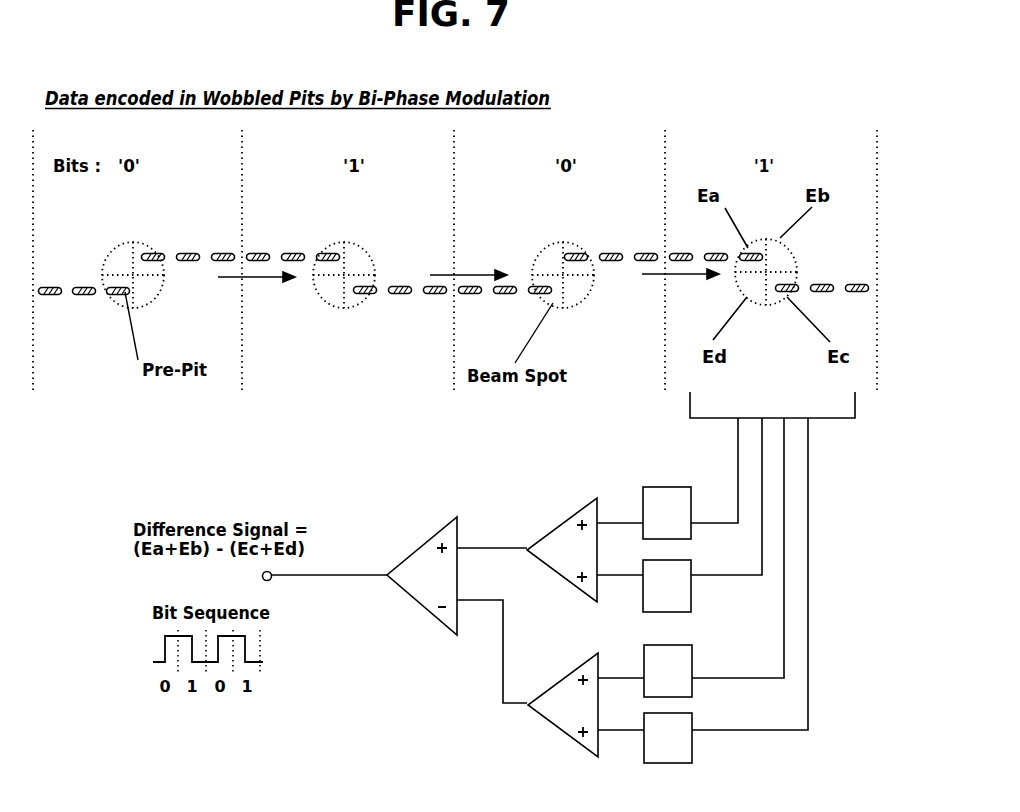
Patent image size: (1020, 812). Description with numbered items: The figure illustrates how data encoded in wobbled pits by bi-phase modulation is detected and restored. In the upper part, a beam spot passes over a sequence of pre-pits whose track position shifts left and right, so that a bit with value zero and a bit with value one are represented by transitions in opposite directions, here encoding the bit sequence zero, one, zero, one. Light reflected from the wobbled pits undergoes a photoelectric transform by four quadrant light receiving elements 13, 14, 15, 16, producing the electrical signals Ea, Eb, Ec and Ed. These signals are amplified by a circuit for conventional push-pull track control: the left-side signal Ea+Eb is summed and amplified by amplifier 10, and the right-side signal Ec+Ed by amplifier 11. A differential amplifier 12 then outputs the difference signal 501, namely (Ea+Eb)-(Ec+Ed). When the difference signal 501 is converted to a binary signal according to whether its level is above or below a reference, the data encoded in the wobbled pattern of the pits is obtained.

The amplifier 10 is at (565, 518).
The amplifier 11 is at (565, 675).
The differential amplifier 12 is at (422, 547).
The quadrant light receiving element 13 is at (691, 490).
The quadrant light receiving element 14 is at (691, 600).
The quadrant light receiving element 15 is at (692, 665).
The quadrant light receiving element 16 is at (692, 748).
The difference signal 501 is at (360, 576).